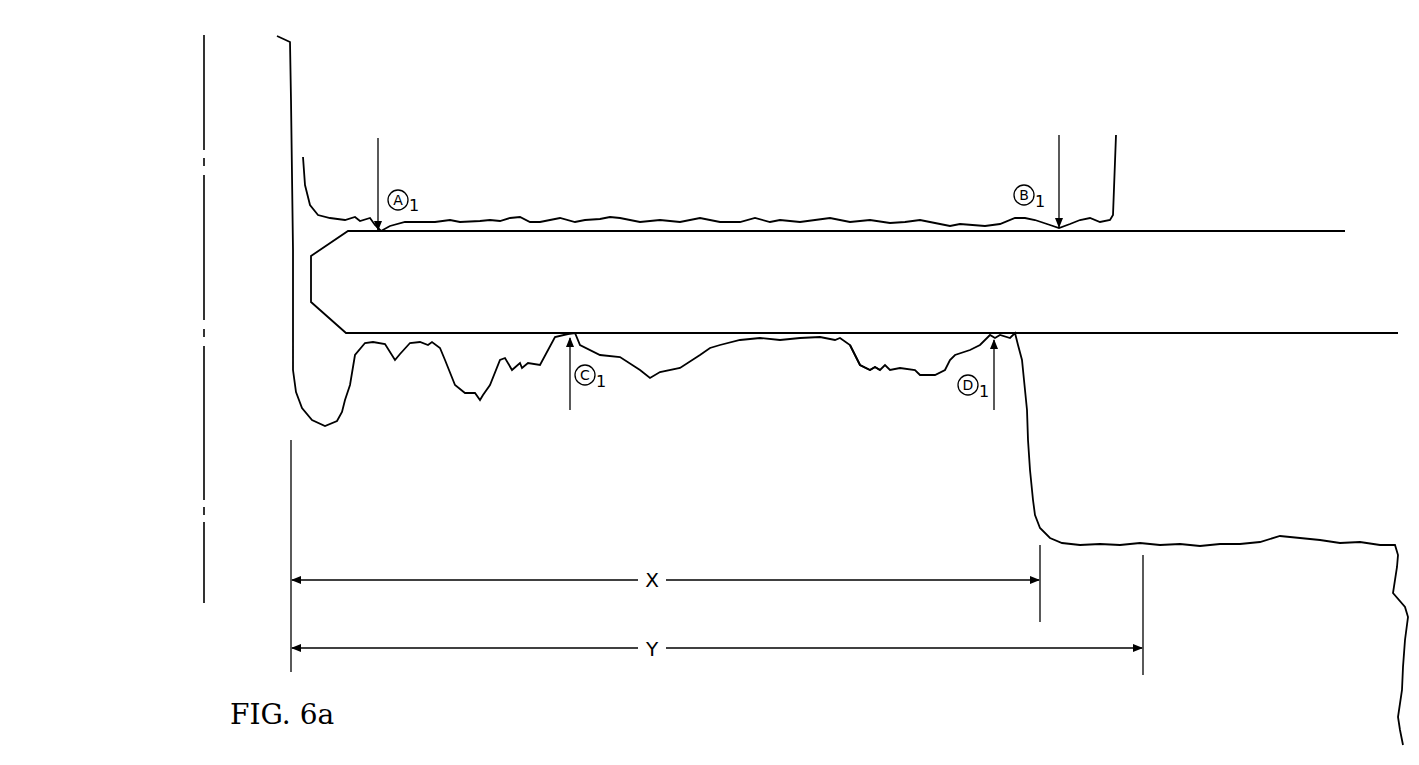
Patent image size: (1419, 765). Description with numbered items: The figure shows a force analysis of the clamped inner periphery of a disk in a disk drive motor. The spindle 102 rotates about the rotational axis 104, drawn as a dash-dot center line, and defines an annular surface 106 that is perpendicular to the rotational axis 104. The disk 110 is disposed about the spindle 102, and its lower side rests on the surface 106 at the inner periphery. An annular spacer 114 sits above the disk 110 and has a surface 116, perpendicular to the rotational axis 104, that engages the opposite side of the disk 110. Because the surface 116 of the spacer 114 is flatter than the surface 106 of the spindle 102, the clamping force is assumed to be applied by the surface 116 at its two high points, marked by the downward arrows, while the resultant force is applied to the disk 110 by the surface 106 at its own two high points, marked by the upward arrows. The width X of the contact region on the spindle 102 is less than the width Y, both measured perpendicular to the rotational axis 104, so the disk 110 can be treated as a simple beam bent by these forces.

The spindle 102 is at (800, 455).
The rotational axis 104 is at (206, 437).
The annular surface 106 is at (871, 360).
The first disk 110 is at (1286, 297).
The annular spacer 114 is at (789, 191).
The spacer surface 116 is at (934, 223).